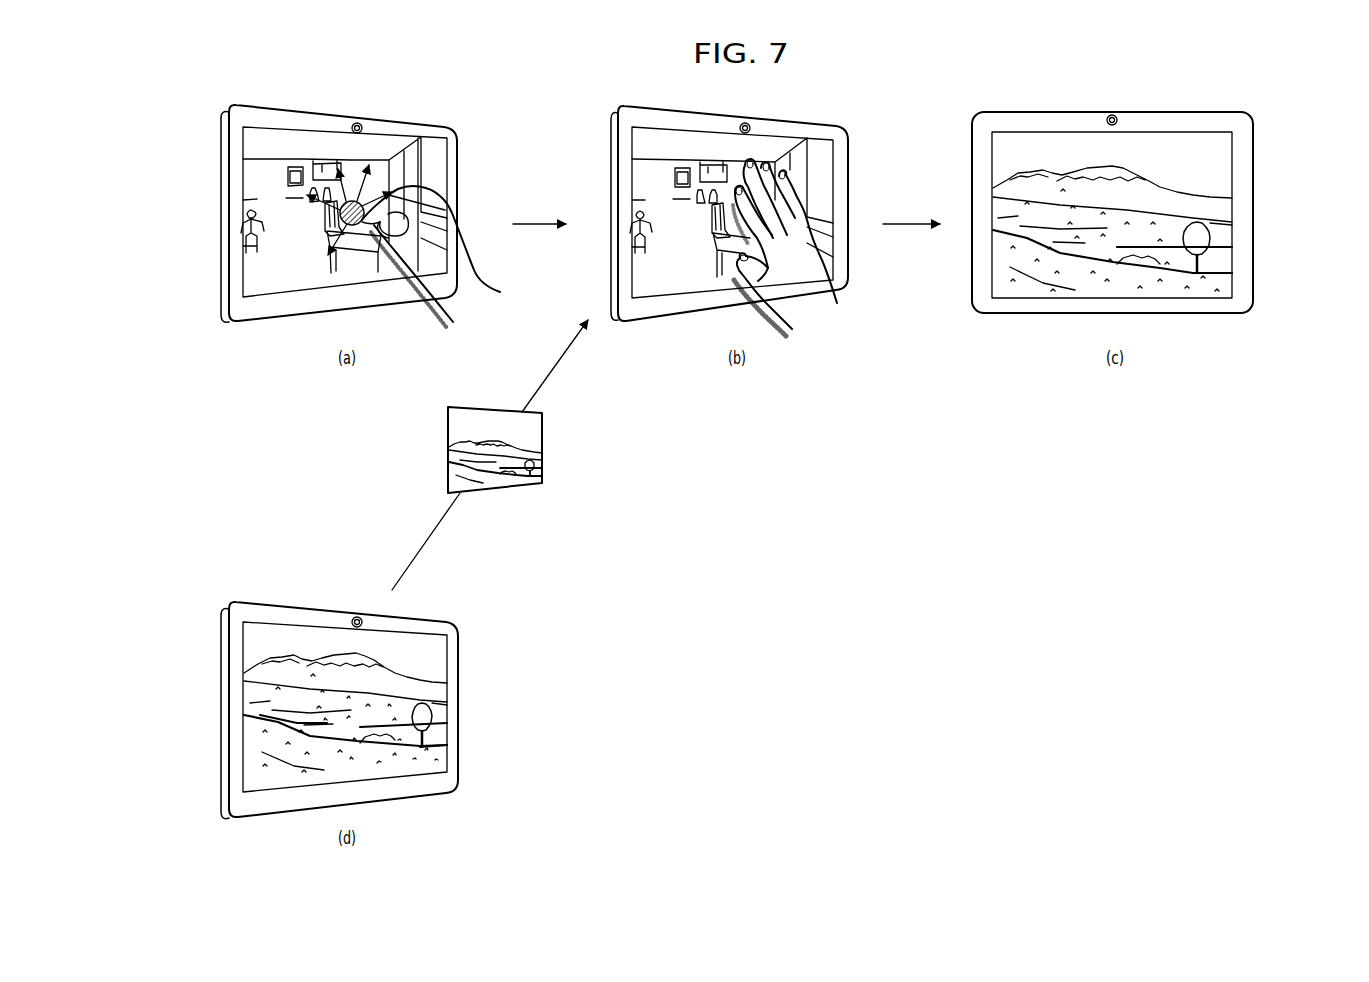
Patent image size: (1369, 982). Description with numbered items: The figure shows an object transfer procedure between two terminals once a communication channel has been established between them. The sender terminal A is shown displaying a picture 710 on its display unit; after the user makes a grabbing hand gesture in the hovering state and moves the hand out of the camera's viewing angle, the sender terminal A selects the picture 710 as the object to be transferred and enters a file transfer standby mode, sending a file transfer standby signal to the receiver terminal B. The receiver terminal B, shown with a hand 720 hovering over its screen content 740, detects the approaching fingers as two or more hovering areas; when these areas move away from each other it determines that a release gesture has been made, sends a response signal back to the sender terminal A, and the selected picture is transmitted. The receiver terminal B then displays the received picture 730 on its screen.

The picture 710 is at (437, 662).
The user's hand / touch input 720 is at (473, 277).
The picture 730 is at (1208, 157).
The augmented reality scene 740 is at (278, 143).
The sender terminal A is at (220, 705).
The receiver terminal B is at (220, 210).